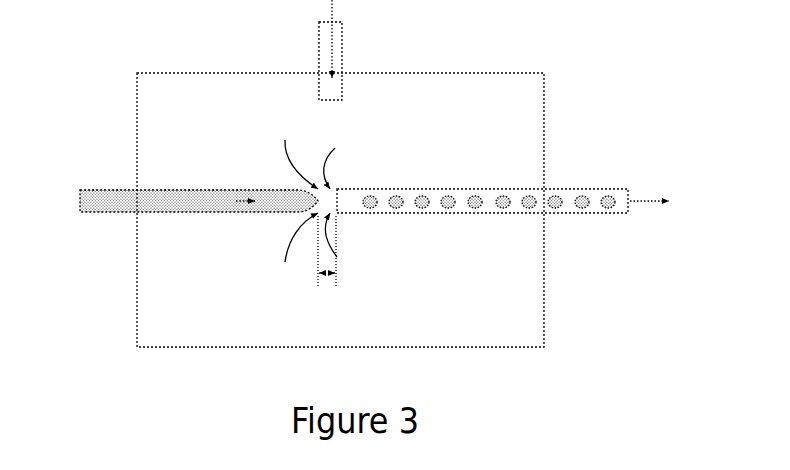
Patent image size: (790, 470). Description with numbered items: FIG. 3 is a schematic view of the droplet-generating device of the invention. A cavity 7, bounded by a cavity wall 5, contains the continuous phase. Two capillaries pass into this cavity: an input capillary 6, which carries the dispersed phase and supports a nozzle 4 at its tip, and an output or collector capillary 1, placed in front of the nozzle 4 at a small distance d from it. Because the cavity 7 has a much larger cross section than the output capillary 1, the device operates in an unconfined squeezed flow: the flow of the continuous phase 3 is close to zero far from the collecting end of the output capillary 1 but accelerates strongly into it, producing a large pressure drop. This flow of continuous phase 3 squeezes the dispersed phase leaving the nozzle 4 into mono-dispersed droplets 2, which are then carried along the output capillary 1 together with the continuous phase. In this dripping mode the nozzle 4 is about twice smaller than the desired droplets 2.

The output capillary 1 is at (427, 189).
The droplets of dispersed phase 2 is at (580, 197).
The flow of continuous phase 3 is at (294, 162).
The nozzle 4 is at (315, 205).
The cavity wall 5 is at (448, 73).
The input capillary 6 is at (185, 190).
The cavity 7 is at (408, 295).